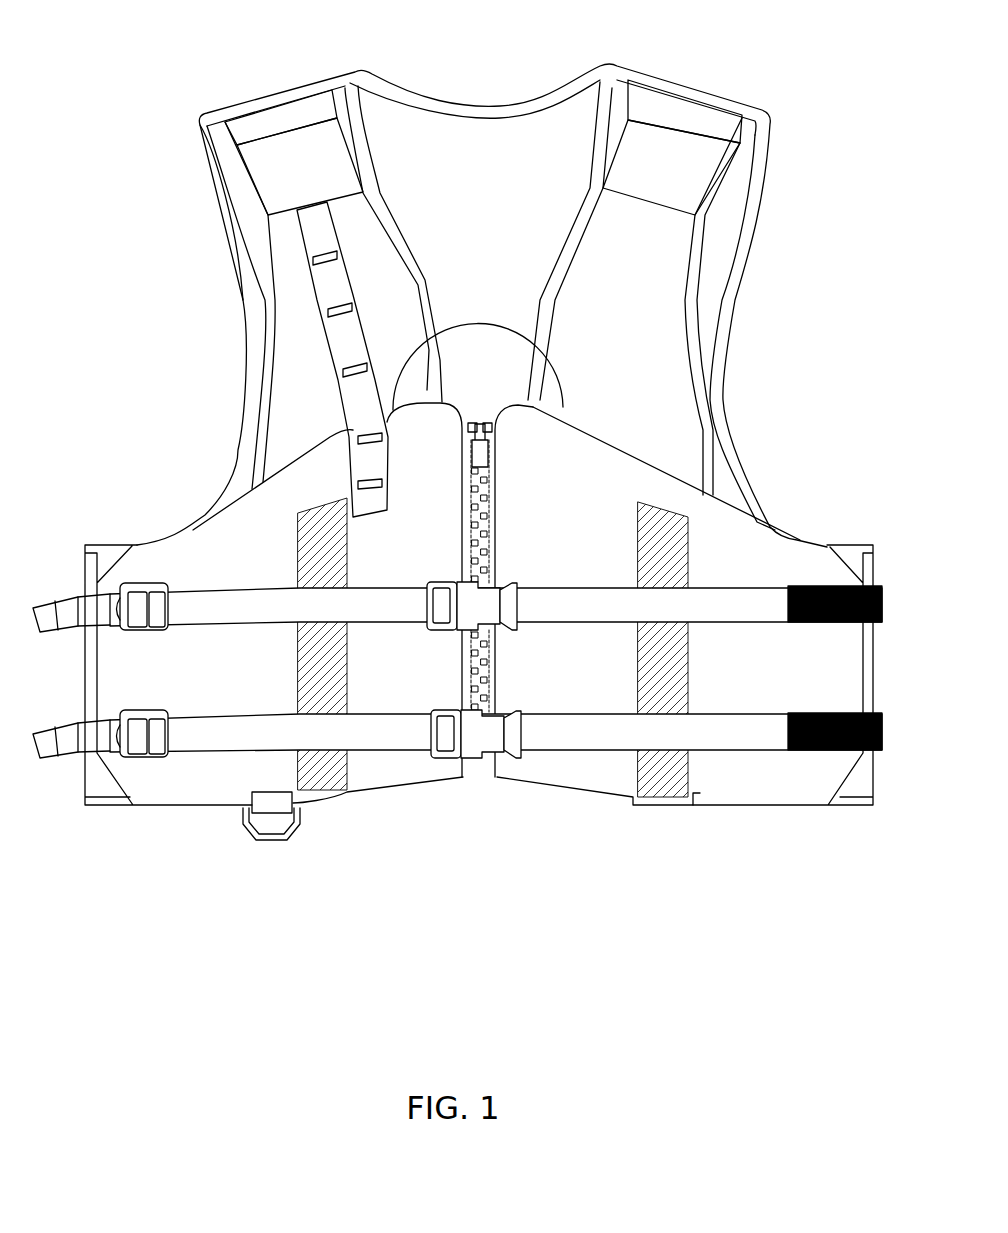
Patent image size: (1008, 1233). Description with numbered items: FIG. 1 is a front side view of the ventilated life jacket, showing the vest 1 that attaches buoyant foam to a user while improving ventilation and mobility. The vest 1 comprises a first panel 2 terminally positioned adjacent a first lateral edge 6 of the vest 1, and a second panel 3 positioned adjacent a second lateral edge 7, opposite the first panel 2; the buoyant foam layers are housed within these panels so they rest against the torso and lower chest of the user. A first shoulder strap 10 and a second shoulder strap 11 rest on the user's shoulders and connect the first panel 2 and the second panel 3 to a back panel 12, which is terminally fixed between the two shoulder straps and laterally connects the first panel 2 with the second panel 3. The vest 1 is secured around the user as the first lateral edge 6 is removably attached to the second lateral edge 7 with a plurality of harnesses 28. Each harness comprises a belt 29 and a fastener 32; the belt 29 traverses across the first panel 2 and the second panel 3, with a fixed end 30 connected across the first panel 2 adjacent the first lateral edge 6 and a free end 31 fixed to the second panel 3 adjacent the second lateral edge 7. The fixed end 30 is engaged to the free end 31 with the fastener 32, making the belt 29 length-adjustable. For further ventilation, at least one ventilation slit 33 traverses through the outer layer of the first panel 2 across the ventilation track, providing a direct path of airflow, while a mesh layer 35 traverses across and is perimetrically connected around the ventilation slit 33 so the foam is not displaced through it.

The vest 1 is at (212, 94).
The first panel 2 is at (163, 555).
The second panel 3 is at (808, 555).
The first lateral edge 6 is at (462, 528).
The second lateral edge 7 is at (495, 528).
The first shoulder strap 10 is at (262, 362).
The second shoulder strap 11 is at (695, 373).
The back panel 12 is at (222, 208).
The harnesses 28 is at (286, 576).
The belt 29 is at (172, 620).
The fixed end 30 is at (440, 618).
The free end 31 is at (517, 605).
The fastener 32 is at (452, 580).
The ventilation slit 33 is at (333, 500).
The mesh layer 35 is at (303, 503).